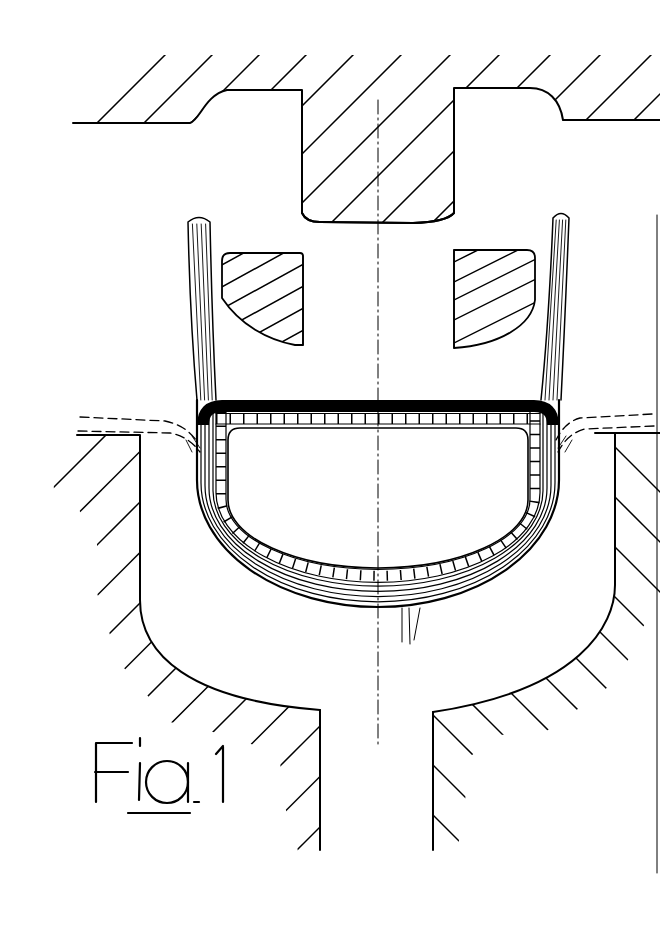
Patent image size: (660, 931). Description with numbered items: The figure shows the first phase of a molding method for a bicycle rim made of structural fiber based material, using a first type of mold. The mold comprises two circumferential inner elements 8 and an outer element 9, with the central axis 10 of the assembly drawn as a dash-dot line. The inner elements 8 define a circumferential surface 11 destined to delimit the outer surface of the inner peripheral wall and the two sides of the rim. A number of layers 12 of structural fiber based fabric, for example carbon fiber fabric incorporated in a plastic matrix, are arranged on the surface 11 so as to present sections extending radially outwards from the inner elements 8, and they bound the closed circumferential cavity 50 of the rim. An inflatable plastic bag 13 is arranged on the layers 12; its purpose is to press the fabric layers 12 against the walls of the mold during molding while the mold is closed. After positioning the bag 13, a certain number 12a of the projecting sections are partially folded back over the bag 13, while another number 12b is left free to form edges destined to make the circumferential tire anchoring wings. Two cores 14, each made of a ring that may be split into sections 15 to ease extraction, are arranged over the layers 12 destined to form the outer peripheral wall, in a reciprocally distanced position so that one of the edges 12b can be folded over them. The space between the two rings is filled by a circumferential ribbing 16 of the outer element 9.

The inner elements 8 is at (137, 690).
The outer element 9 is at (163, 132).
The central axis 10 is at (380, 468).
The circumferential surface 11 is at (292, 698).
The layers of structural fiber based fabric 12 is at (106, 410).
The folded-back projecting sections 12a is at (372, 400).
The free edges 12b is at (185, 276).
The inflatable bag 13 is at (298, 424).
The cores 14 is at (440, 306).
The ring sections 15 is at (263, 252).
The circumferential ribbing 16 is at (432, 150).
The closed circumferential cavity 50 is at (295, 512).